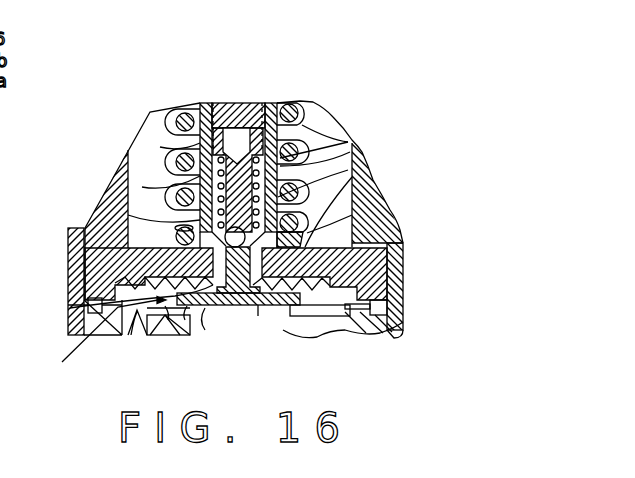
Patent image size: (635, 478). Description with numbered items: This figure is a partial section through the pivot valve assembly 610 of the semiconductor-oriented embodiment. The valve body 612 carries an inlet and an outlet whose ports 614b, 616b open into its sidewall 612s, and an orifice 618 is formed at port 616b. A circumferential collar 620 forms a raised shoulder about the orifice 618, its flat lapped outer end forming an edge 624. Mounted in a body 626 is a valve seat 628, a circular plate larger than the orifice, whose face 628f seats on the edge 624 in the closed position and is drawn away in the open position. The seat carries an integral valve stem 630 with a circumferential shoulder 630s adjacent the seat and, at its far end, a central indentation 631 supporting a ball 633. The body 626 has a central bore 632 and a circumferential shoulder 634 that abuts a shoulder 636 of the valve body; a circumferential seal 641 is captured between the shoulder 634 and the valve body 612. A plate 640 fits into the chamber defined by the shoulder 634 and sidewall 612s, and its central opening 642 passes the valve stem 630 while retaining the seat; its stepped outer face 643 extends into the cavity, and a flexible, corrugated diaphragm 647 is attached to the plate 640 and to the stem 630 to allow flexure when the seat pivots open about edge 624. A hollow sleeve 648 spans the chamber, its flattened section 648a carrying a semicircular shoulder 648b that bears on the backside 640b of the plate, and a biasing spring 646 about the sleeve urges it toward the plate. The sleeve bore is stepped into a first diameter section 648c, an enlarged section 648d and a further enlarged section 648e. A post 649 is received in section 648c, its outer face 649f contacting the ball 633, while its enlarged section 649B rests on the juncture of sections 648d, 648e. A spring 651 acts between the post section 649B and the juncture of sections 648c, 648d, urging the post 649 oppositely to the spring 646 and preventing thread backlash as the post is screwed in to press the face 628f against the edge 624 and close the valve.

The valve assembly 610 is at (115, 146).
The valve body 612 is at (60, 317).
The sidewall 612s is at (168, 333).
The port 614b is at (137, 313).
The port 616b is at (284, 312).
The orifice 618 is at (233, 322).
The circumferential collar 620 is at (197, 312).
The edge 624 is at (368, 347).
The body 626 is at (366, 138).
The valve seat 628 is at (103, 338).
The face 628f is at (258, 316).
The valve stem 630 is at (384, 253).
The circumferential shoulder 630s is at (400, 312).
The indentation 631 is at (84, 250).
The central bore 632 is at (160, 118).
The ball 633 is at (174, 230).
The circumferential shoulder 634 is at (413, 292).
The circumferential shoulder 636 is at (70, 308).
The plate 640 is at (399, 251).
The backside 640b is at (389, 207).
The circumferential seal 641 is at (76, 337).
The central opening 642 is at (340, 270).
The stepped outer face 643 is at (383, 299).
The biasing spring 646 is at (285, 105).
The flexible diaphragm 647 is at (85, 276).
The sleeve 648 is at (325, 187).
The flattened section 648a is at (340, 192).
The semicircular shoulder 648b is at (358, 222).
The first diameter section 648c is at (340, 177).
The enlarged diameter section 648d is at (340, 160).
The further enlarged diameter section 648e is at (283, 124).
The post 649 is at (227, 132).
The enlarged diameter section 649B is at (162, 147).
The outer face 649f is at (112, 190).
The spring 651 is at (160, 188).